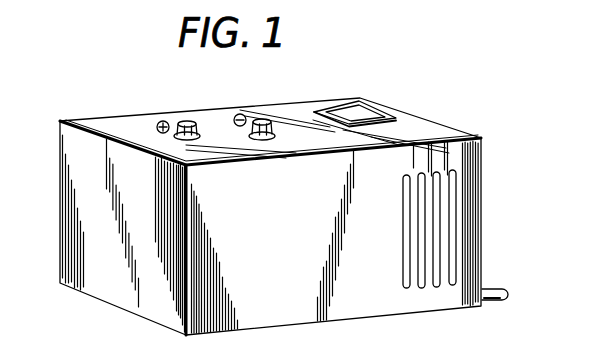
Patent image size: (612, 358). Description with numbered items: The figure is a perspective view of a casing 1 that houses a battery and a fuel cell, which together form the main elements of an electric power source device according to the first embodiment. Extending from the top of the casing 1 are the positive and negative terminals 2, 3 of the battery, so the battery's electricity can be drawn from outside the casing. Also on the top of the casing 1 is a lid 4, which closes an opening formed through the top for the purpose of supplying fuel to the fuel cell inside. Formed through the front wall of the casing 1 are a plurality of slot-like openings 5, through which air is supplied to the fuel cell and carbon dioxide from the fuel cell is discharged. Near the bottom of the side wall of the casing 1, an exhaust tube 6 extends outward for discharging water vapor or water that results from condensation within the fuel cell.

The casing 1 is at (162, 306).
The positive terminal 2 is at (183, 122).
The negative terminal 3 is at (257, 118).
The lid 4 is at (368, 112).
The slot-like openings 5 is at (405, 284).
The exhaust tube 6 is at (496, 303).